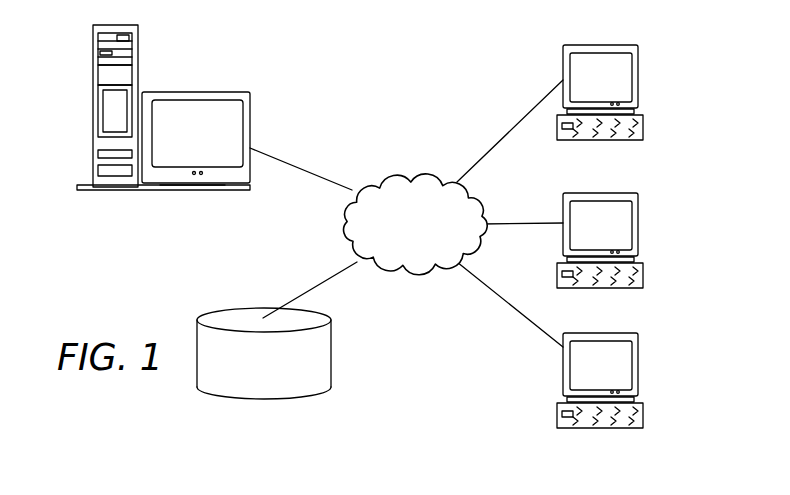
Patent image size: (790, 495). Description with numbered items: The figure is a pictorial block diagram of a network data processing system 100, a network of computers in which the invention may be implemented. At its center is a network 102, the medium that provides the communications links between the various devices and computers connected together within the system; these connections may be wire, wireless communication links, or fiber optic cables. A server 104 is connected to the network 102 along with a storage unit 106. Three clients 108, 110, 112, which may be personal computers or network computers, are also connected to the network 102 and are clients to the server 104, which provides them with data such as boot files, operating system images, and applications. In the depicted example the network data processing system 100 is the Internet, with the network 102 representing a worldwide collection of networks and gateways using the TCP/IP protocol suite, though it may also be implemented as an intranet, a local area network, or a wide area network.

The network data processing system 100 is at (465, 60).
The network 102 is at (388, 175).
The server 104 is at (93, 113).
The storage unit 106 is at (247, 397).
The client 108 is at (638, 78).
The client 110 is at (638, 223).
The client 112 is at (638, 367).